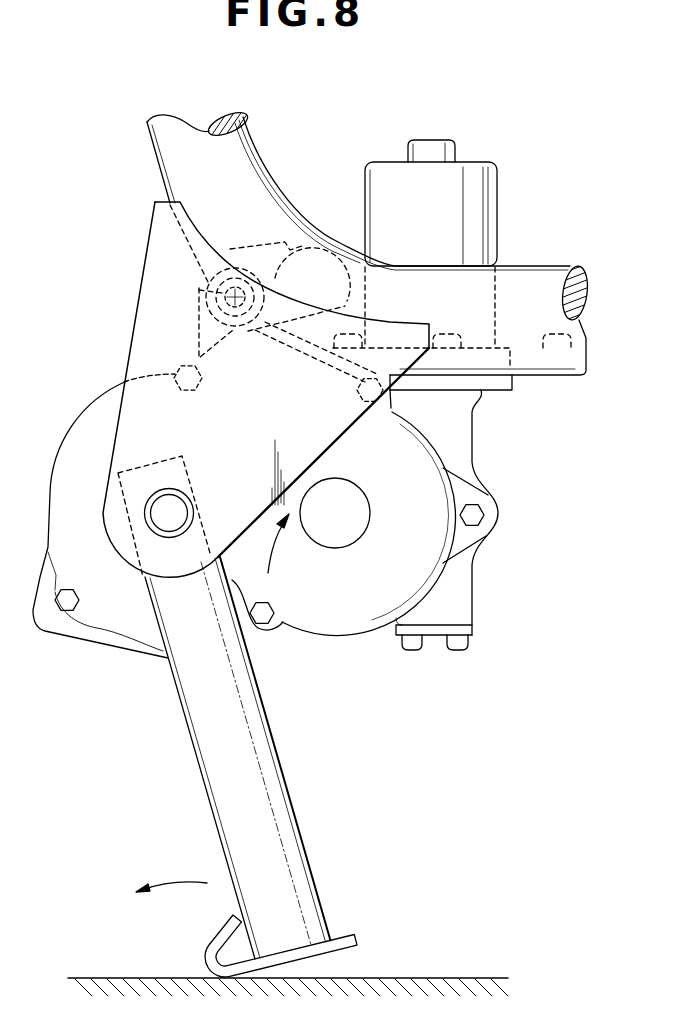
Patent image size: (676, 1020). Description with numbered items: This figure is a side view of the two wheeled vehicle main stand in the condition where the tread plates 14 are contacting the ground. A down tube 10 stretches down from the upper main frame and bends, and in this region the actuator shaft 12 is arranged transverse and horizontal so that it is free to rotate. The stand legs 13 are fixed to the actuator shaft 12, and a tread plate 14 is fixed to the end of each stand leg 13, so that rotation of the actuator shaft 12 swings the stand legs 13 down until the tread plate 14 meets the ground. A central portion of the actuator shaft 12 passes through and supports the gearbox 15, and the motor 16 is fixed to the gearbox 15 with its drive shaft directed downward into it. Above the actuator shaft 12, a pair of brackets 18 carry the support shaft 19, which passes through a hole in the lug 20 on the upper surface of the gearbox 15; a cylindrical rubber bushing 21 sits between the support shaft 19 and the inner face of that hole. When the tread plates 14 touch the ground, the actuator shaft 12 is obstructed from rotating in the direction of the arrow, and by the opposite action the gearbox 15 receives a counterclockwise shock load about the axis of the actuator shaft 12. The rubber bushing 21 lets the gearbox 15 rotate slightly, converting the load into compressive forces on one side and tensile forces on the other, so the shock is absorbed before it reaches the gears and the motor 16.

The down tube 10 is at (258, 148).
The actuator shaft 12 is at (144, 513).
The stand leg 13 is at (268, 725).
The tread plate 14 is at (216, 936).
The gearbox 15 is at (365, 633).
The motor 16 is at (498, 188).
The bracket 18 is at (274, 234).
The support shaft 19 is at (224, 293).
The lug 20 is at (197, 347).
The rubber bushing 21 is at (233, 298).